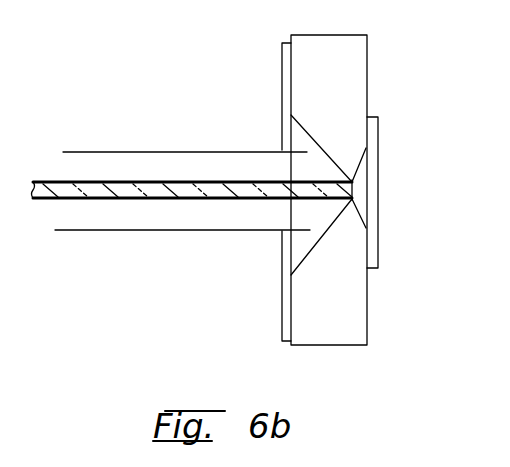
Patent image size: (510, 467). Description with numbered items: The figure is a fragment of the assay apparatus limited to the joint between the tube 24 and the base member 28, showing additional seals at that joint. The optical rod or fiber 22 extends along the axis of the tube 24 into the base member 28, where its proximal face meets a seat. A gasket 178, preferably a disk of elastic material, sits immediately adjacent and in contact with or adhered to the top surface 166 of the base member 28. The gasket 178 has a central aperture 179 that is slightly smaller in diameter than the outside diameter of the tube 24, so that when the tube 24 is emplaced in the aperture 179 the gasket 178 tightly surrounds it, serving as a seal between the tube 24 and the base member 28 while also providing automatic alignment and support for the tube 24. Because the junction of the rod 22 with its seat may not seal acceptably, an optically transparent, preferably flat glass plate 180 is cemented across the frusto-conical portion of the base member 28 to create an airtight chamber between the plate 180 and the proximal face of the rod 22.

The optical rod or fiber 22 is at (42, 198).
The tube 24 is at (107, 152).
The base member 28 is at (338, 42).
The top surface 166 is at (288, 313).
The gasket 178 is at (283, 253).
The central aperture 179 is at (285, 150).
The plate 180 is at (378, 142).